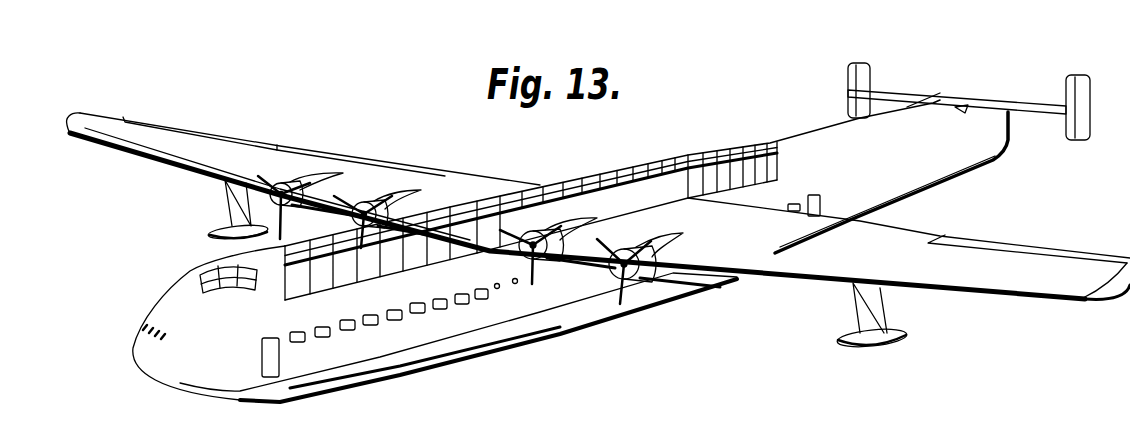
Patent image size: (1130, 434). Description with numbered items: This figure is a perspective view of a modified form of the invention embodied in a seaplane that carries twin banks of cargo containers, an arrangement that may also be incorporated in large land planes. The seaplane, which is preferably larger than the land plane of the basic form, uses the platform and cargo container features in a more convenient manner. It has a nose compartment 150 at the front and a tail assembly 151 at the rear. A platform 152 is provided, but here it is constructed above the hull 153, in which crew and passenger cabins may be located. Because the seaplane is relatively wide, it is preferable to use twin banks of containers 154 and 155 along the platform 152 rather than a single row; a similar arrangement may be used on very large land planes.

The nose compartment 150 is at (172, 300).
The tail assembly 151 is at (943, 168).
The platform 152 is at (369, 276).
The hull 153 is at (430, 350).
The containers 154 is at (599, 176).
The containers 155 is at (657, 174).